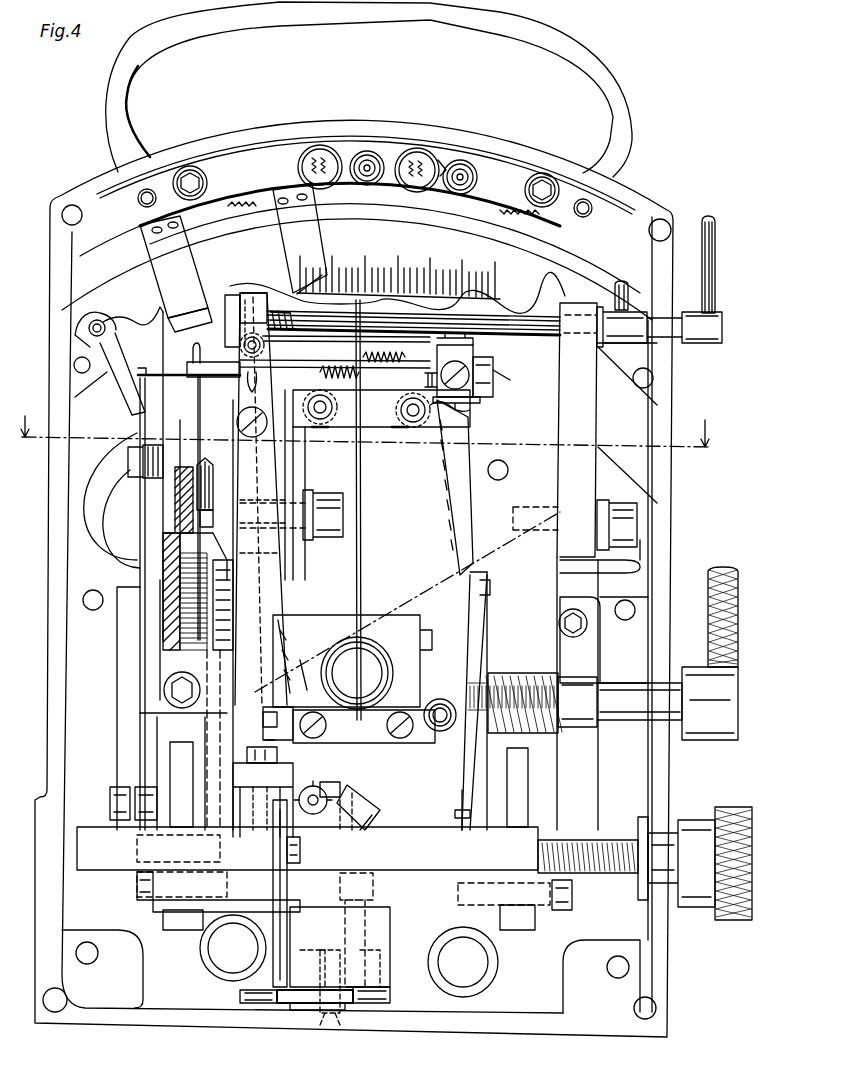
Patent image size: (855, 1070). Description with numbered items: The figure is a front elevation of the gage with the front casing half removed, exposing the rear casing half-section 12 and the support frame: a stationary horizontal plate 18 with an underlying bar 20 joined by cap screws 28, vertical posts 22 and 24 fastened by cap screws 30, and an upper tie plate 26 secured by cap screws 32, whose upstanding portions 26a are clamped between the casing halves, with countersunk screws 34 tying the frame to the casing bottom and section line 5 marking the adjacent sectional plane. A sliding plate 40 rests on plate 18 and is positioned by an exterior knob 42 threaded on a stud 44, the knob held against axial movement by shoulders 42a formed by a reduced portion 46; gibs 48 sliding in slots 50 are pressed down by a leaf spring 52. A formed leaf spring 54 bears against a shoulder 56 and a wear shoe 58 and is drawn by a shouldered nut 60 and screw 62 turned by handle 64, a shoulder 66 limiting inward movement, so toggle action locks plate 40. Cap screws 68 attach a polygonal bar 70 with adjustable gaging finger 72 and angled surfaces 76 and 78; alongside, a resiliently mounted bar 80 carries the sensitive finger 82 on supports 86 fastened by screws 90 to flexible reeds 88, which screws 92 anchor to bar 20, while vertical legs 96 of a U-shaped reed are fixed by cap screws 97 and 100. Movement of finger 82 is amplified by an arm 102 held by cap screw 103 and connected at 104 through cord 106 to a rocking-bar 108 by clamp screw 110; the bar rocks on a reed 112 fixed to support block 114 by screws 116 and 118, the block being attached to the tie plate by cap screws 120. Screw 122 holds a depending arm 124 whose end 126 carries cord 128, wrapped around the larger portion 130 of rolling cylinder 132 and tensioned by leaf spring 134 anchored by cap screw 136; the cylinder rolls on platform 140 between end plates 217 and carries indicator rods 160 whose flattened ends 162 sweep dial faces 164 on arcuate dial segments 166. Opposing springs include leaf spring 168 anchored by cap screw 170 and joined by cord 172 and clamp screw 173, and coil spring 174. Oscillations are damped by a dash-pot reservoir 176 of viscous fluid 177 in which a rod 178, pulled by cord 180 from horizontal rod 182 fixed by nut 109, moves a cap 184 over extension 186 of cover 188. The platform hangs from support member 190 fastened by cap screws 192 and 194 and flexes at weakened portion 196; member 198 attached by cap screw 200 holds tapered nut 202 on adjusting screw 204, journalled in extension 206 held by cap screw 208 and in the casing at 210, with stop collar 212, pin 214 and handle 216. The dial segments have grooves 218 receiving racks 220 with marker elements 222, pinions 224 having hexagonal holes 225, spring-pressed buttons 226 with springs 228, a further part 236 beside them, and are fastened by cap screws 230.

The section line 5- 5 is at (365, 421).
The rear casing half-section 12 is at (656, 522).
The stationary horizontal plate member 18 is at (63, 210).
The horizontal bar member 20 is at (384, 960).
The vertical post member 22 is at (157, 736).
The vertical post member 24 is at (548, 779).
The upper tie plate member 26 is at (390, 607).
The upwardly extending portions of tie plate 26a is at (560, 308).
The cap screws 28 is at (374, 890).
The cap screws 30 is at (136, 886).
The cap screws 32 is at (507, 472).
The countersunk head screws 34 is at (326, 1015).
The sliding horizontal plate 40 is at (405, 840).
The screw-threaded knob 42 is at (739, 809).
The shoulders 42a is at (645, 818).
The threaded stud 44 is at (626, 842).
The reduced diameter portion 46 is at (668, 826).
The gibs 48 is at (188, 826).
The slots 50 is at (194, 766).
The leaf spring 52 is at (196, 933).
The formed leaf spring 54 is at (476, 641).
The shoulder 56 is at (486, 573).
The wear shoe 58 is at (465, 806).
The shouldered nut 60 is at (455, 722).
The screw 62 is at (483, 678).
The handle 64 is at (737, 630).
The shoulder 66 is at (569, 684).
The cap screws 68 is at (353, 795).
The horizontal bar 70 is at (372, 821).
The adjustable gaging finger 72 is at (330, 786).
The upper surface 76 is at (343, 785).
The upper surface 78 is at (362, 806).
The resiliently mounted horizontal bar 80 is at (245, 800).
The sensitive gaging finger 82 is at (313, 786).
The support elements 86 is at (276, 890).
The flexible reeds 88 is at (310, 1004).
The cap screws 90 is at (240, 996).
The cap screws 92 is at (391, 995).
The vertical legs 96 is at (289, 905).
The cap screws 97 is at (287, 851).
The cap screws 100 is at (283, 1004).
The vertical arm 102 is at (280, 574).
The cap screw 103 is at (258, 747).
The connection point 104 is at (264, 308).
The flexible cord 106 is at (265, 358).
The rocking-bar 108 is at (480, 352).
The nut 109 is at (494, 388).
The clamp screw 110 is at (462, 330).
The flexible reed 112 is at (408, 440).
The support block 114 is at (366, 440).
The screws 116 is at (402, 410).
The screws 118 is at (482, 400).
The cap screws 120 is at (364, 434).
The screw 122 is at (494, 375).
The downwardly extending arm 124 is at (437, 498).
The connection point 126 is at (440, 732).
The flexible cord 128 is at (418, 745).
The larger diameter portion 130 is at (394, 660).
The rolling cylinder 132 is at (338, 640).
The leaf spring 134 is at (147, 677).
The cap screw 136 is at (128, 463).
The platform 140 is at (344, 655).
The indicator rods 160 is at (361, 573).
The flattened ends 162 is at (396, 272).
The dial faces 164 is at (457, 272).
The arcuate dial segments 166 is at (606, 213).
The biasing leaf spring 168 is at (140, 565).
The cap screw 170 is at (110, 805).
The flexible cord 172 is at (170, 373).
The clamp screw 173 is at (252, 438).
The biasing coil spring 174 is at (327, 408).
The reservoir 176 is at (222, 642).
The viscous fluid 177 is at (234, 604).
The reciprocating rod 178 is at (213, 525).
The flexible cord 180 is at (197, 416).
The horizontal rod 182 is at (197, 413).
The cap member 184 is at (210, 480).
The hollow cylindrical extension 186 is at (178, 513).
The cover member 188 is at (180, 524).
The platform support member 190 is at (303, 576).
The cap screws 192 is at (300, 452).
The cap screws 194 is at (268, 722).
The intermediate portion 196 is at (300, 466).
The laterally disposed member 198 is at (258, 292).
The cap screw 200 is at (340, 541).
The tapered nut 202 is at (236, 293).
The horizontal adjusting screw 204 is at (548, 318).
The upward extension 206 is at (598, 438).
The knob 208 is at (632, 503).
The journal in casing wall 210 is at (680, 346).
The stop collar 212 is at (597, 361).
The radial pin 214 is at (627, 281).
The handle 216 is at (716, 265).
The end plates 217 is at (366, 620).
The arcuate grooves 218 is at (146, 206).
The arcuate racks 220 is at (210, 205).
The translucent marker element 222 is at (316, 233).
The pinion gear 224 is at (369, 152).
The hexagonal hole 225 is at (376, 165).
The spring-pressed button 226 is at (326, 150).
The springs 228 is at (414, 160).
The cap screws 230 is at (199, 167).
The gear 236 is at (436, 165).